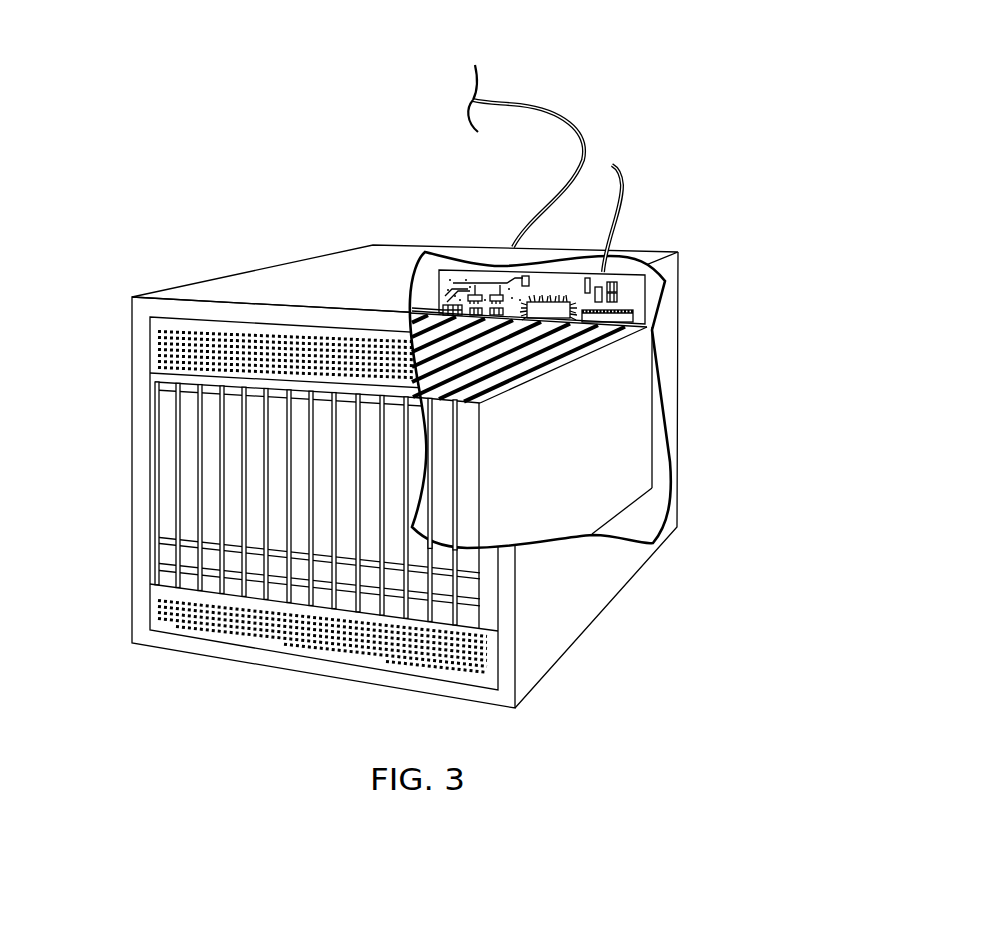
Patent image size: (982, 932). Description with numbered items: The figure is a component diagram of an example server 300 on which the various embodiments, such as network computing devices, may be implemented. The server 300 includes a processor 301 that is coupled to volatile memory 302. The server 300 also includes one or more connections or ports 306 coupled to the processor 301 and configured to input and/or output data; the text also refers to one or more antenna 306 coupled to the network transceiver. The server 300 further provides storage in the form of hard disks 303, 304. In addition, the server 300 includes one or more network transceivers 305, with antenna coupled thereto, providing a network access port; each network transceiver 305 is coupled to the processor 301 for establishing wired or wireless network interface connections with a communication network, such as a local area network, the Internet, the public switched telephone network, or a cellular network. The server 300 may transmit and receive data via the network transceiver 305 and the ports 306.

The server 300 is at (112, 66).
The processor 301 is at (520, 263).
The volatile memory 302 is at (668, 293).
The storage hard disk 303 is at (263, 505).
The storage hard disk 304 is at (264, 494).
The network transceiver 305 is at (367, 259).
The connections or ports 306 is at (555, 168).